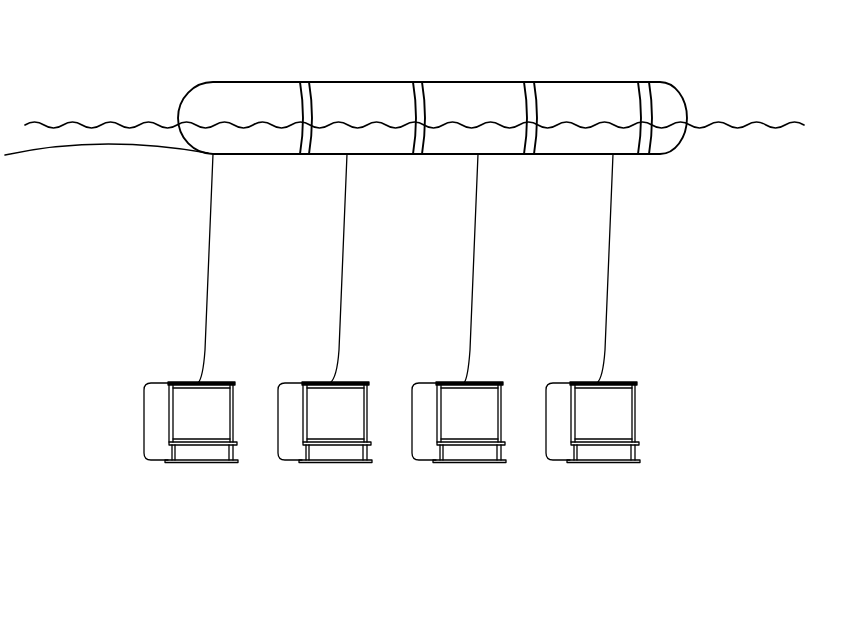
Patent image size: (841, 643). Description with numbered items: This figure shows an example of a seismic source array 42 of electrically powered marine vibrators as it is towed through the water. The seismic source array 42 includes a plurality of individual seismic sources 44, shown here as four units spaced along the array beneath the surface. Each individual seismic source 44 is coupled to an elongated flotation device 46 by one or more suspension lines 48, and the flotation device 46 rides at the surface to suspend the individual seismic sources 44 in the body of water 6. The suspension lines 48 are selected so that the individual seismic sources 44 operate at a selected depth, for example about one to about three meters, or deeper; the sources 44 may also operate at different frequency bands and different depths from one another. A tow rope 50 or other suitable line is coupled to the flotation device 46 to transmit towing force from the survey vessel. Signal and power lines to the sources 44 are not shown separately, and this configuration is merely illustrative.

The body of water 6 is at (127, 290).
The seismic source array 42 is at (406, 453).
The individual seismic source 44 is at (233, 399).
The flotation device 46 is at (482, 82).
The suspension line 48 is at (209, 265).
The tow rope 50 is at (101, 147).